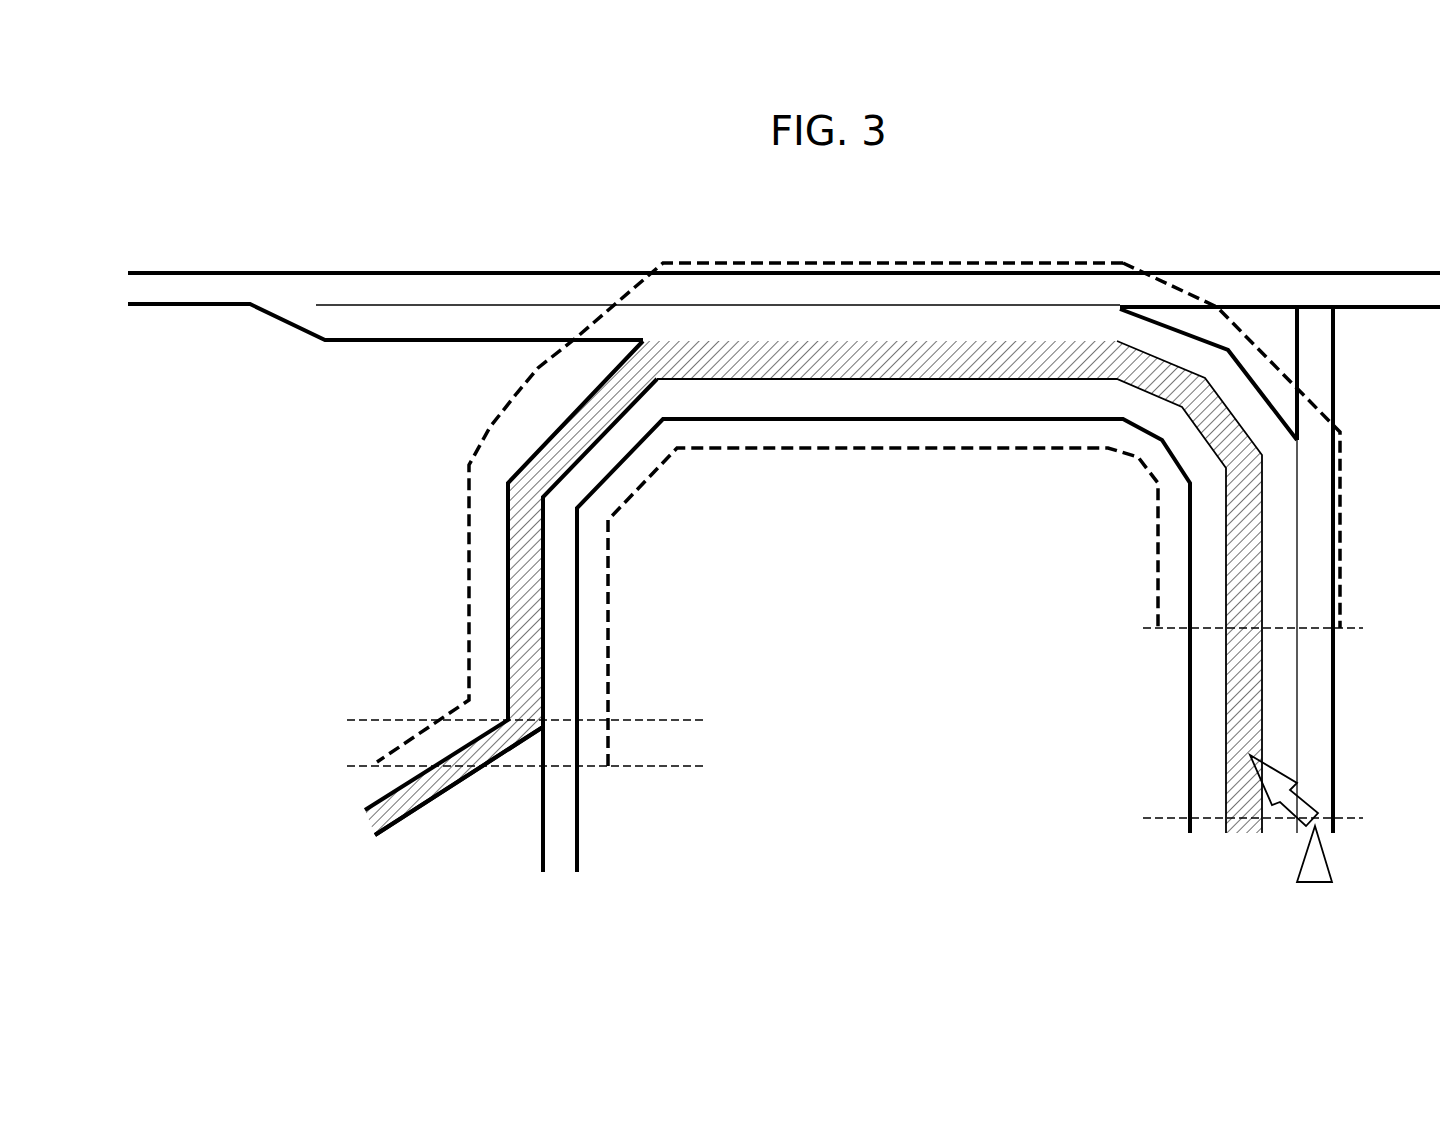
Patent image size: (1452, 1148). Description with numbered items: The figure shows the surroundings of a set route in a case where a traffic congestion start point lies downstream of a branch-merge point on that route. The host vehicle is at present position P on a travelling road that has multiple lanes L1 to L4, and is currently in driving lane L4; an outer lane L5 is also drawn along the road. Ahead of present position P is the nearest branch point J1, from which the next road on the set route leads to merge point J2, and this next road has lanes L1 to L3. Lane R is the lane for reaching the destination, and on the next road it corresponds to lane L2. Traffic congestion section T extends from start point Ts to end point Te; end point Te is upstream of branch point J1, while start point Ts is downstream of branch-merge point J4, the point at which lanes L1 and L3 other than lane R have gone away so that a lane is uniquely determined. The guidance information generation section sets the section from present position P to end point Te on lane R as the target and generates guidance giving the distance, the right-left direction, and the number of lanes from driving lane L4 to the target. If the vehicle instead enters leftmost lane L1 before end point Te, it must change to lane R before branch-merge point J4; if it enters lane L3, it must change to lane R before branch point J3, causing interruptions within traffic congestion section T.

The lane L5 is at (1371, 292).
The driving lane L4 is at (1323, 735).
The lane L3 is at (1290, 694).
The lane L2 is at (1237, 693).
The leftmost lane L1 is at (1202, 735).
The lane R is at (417, 812).
The traffic congestion section T is at (863, 450).
The branch point J1 is at (1145, 497).
The merge point J2 is at (1107, 473).
The branch point J3 is at (670, 450).
The branch-merge point J4 is at (544, 720).
The start point Ts is at (545, 766).
The end point Te is at (1271, 628).
The present position P is at (1264, 818).